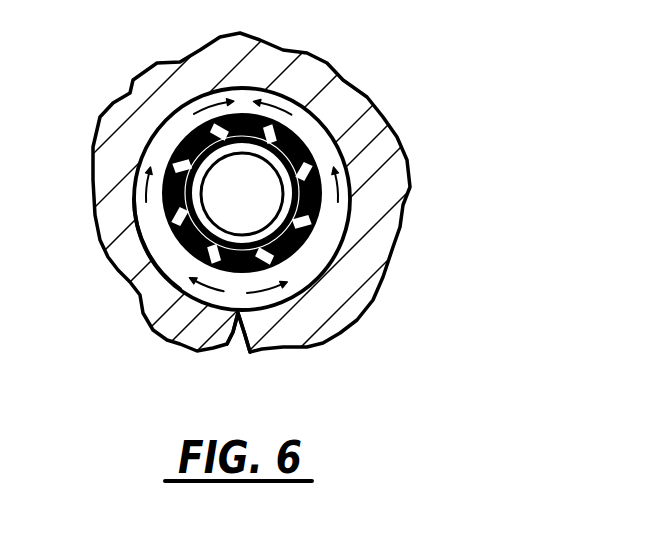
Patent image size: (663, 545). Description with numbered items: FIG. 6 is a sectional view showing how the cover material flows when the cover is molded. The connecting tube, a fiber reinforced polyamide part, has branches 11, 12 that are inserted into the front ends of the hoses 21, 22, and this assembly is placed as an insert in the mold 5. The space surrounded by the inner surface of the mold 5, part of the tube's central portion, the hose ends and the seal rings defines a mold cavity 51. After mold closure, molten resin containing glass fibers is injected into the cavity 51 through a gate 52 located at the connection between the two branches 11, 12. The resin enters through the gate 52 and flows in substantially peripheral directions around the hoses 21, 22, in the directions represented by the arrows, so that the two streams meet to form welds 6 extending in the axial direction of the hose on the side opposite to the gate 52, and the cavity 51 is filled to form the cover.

The mold 5 is at (350, 93).
The weld 6 is at (247, 100).
The hose 21 is at (346, 192).
The hose 22 is at (313, 200).
The branch 11 is at (339, 195).
The branch 12 is at (272, 242).
The mold cavity 51 is at (165, 254).
The gate 52 is at (239, 318).